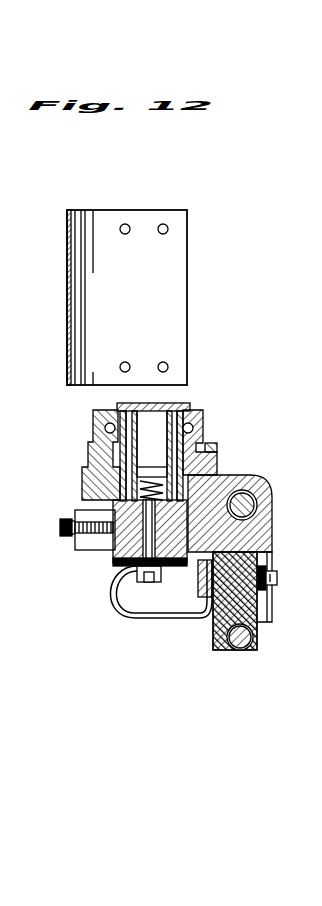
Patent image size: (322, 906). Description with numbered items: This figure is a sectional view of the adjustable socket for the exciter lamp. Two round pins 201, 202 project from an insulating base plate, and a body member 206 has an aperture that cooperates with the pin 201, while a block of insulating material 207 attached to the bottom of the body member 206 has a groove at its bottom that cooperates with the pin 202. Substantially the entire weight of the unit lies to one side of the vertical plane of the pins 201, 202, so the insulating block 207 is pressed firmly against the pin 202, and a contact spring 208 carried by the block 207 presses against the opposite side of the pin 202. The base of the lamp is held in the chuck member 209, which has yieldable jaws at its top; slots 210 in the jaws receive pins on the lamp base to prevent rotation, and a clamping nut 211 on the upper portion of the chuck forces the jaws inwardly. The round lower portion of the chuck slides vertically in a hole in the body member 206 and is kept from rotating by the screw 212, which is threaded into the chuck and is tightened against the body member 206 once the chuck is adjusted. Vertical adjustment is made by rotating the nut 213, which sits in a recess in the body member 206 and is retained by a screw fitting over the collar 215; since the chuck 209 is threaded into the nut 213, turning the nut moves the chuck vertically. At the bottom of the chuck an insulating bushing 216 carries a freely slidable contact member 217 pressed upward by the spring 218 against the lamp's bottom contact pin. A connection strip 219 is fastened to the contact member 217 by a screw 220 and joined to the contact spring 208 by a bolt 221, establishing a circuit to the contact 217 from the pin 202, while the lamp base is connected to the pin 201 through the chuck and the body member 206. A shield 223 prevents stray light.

The round pin 201 is at (262, 478).
The round pin 202 is at (242, 652).
The body member 206 is at (252, 476).
The block of insulating material 207 is at (215, 650).
The contact spring 208 is at (262, 628).
The chuck member 209 is at (187, 407).
The slots 210 is at (193, 405).
The clamping nut 211 is at (205, 420).
The screw 212 is at (60, 527).
The nut 213 is at (215, 450).
The collar 215 is at (88, 472).
The insulating bushing 216 is at (100, 543).
The contact member 217 is at (148, 473).
The spring 218 is at (218, 461).
The connection strip 219 is at (123, 615).
The screw 220 is at (117, 600).
The bolt 221 is at (276, 583).
The shield 223 is at (182, 318).